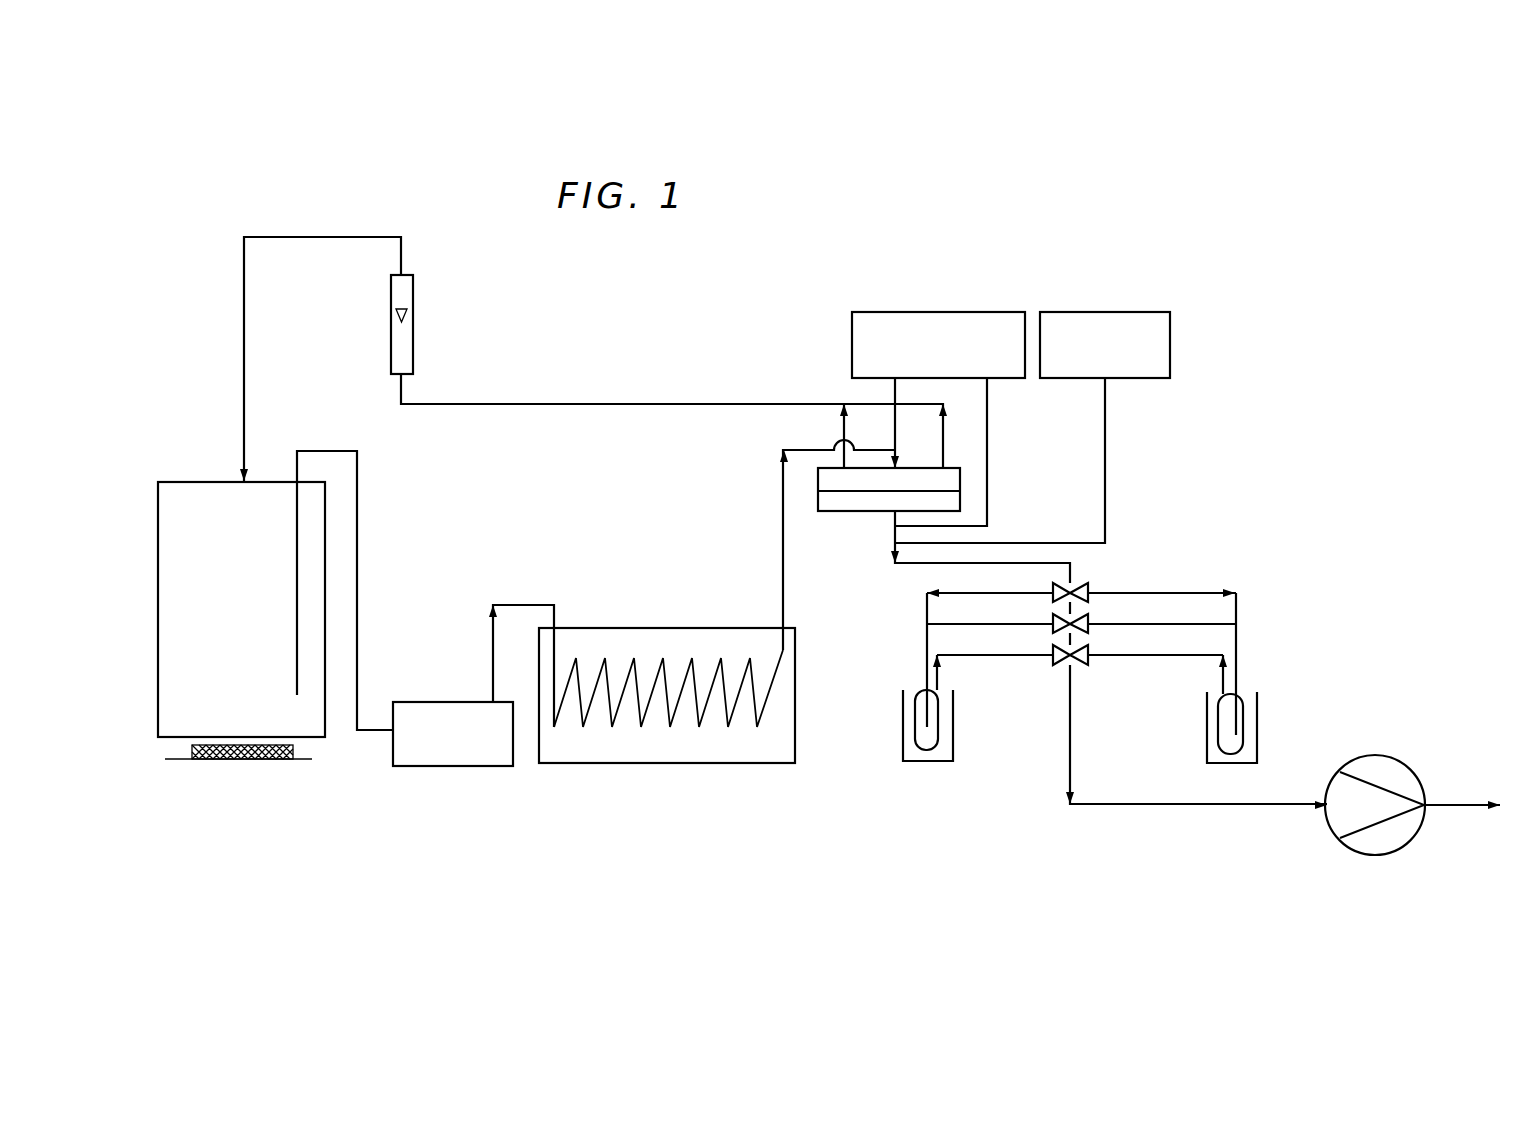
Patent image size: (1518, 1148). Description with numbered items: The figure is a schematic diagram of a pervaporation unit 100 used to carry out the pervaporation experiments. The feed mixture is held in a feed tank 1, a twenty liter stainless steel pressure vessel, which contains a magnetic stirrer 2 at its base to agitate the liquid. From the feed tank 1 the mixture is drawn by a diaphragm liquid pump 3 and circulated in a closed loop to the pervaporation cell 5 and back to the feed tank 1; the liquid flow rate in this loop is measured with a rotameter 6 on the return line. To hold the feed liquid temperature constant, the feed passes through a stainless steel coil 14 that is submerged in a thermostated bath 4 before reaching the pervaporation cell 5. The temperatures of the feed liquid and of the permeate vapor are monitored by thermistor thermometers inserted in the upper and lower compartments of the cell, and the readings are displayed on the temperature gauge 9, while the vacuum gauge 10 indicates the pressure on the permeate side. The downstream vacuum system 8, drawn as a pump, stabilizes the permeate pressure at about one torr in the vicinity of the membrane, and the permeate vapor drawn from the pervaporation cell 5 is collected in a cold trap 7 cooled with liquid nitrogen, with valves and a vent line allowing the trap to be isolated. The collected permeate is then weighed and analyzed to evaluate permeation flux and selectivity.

The feed tank 1 is at (193, 481).
The magnetic stirrer 2 is at (264, 760).
The diaphragm liquid pump 3 is at (410, 702).
The thermostated bath 4 is at (716, 765).
The pervaporation cell 5 is at (855, 512).
The rotameter 6 is at (414, 325).
The cold trap 7 is at (930, 762).
The downstream vacuum system 8 is at (1336, 778).
The temperature gauge 9 is at (955, 312).
The vacuum gauge 10 is at (1115, 312).
The stainless steel coil 14 is at (662, 657).
The pervaporation unit 100 is at (825, 303).